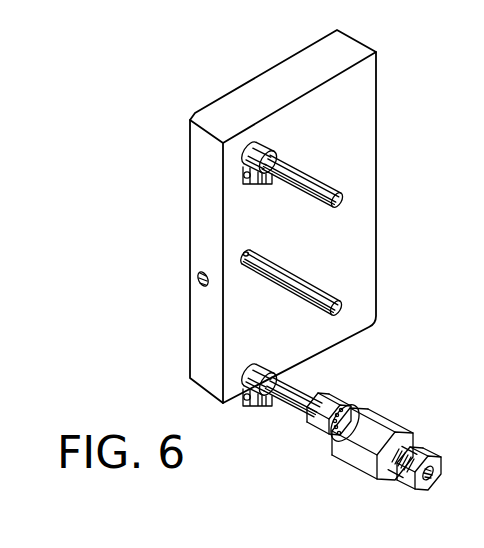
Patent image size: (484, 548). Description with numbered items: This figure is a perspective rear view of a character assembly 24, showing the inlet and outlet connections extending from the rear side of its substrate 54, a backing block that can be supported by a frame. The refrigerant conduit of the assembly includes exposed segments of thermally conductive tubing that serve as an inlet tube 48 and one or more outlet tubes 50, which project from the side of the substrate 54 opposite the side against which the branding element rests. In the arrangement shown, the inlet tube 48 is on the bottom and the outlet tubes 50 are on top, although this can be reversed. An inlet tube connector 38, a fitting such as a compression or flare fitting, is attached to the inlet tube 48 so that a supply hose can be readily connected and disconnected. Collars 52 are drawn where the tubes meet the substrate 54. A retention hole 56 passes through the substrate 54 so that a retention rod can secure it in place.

The character assembly 24 is at (91, 156).
The inlet tube connector 38 is at (342, 462).
The inlet tube 48 is at (303, 390).
The outlet tubes 50 is at (343, 197).
The collars 52 is at (259, 151).
The substrate 54 is at (380, 326).
The retention hole 56 is at (190, 280).